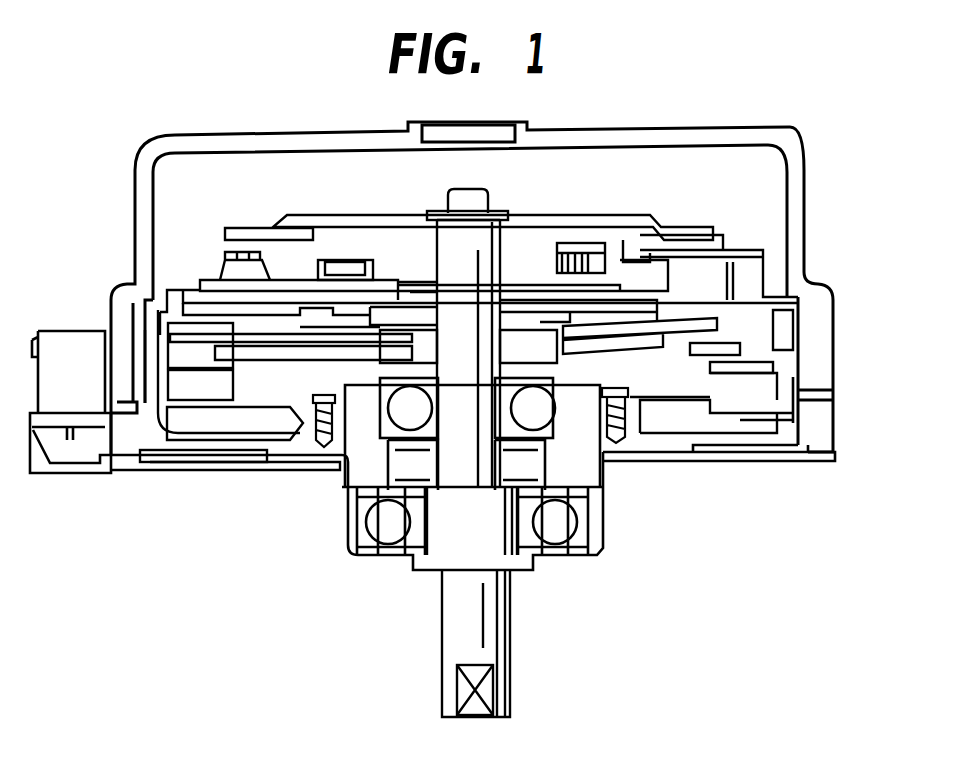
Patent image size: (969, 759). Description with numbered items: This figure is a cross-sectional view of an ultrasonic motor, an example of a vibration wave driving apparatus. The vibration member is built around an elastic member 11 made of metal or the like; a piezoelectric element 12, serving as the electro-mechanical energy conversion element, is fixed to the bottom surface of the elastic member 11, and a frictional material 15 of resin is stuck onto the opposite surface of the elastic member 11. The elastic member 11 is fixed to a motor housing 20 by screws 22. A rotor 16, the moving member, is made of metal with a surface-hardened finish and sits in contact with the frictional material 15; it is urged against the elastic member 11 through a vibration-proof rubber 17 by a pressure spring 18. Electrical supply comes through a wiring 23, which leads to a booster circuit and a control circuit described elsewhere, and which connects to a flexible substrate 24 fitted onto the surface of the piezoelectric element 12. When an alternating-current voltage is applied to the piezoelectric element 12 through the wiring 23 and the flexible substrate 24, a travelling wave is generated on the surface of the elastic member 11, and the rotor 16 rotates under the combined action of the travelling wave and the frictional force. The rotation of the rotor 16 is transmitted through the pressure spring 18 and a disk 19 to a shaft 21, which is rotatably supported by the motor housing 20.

The elastic member 11 is at (740, 397).
The piezoelectric element 12 is at (797, 407).
The frictional material 15 is at (767, 363).
The rotor 16 is at (768, 348).
The vibration-proof rubber 17 is at (797, 312).
The pressure spring 18 is at (690, 335).
The disk 19 is at (535, 315).
The motor housing 20 is at (585, 460).
The shaft 21 is at (500, 636).
The screws 22 is at (318, 440).
The wiring 23 is at (160, 440).
The flexible substrate 24 is at (215, 425).